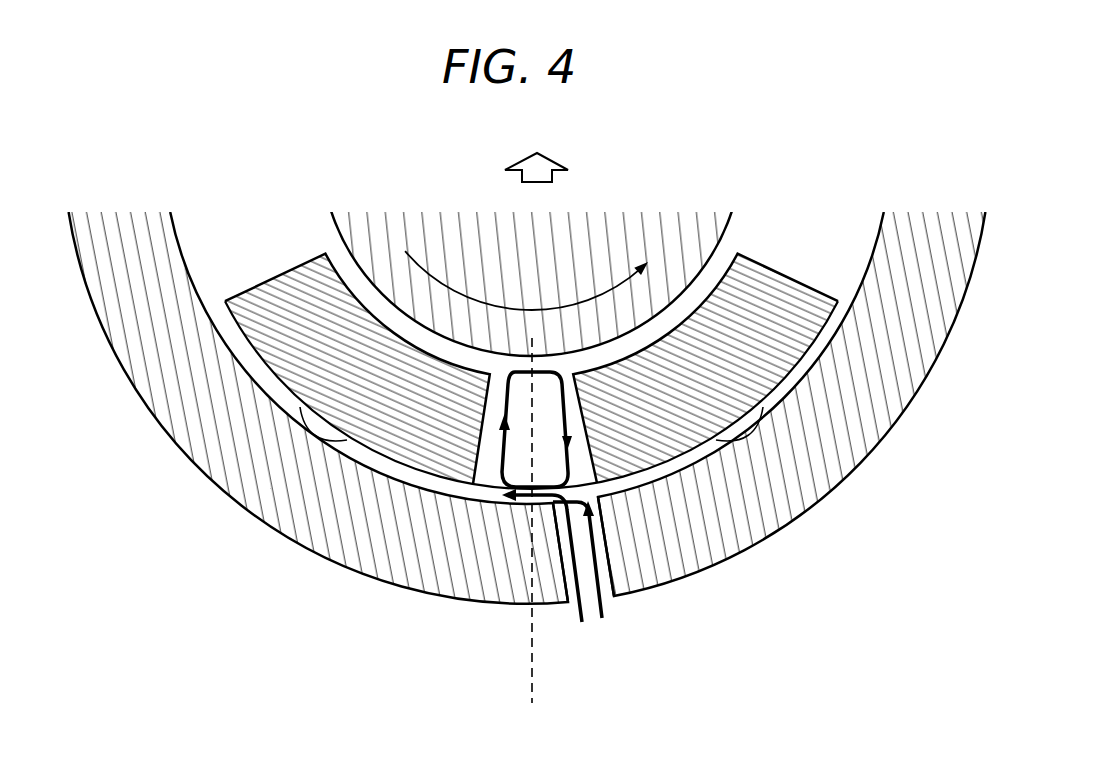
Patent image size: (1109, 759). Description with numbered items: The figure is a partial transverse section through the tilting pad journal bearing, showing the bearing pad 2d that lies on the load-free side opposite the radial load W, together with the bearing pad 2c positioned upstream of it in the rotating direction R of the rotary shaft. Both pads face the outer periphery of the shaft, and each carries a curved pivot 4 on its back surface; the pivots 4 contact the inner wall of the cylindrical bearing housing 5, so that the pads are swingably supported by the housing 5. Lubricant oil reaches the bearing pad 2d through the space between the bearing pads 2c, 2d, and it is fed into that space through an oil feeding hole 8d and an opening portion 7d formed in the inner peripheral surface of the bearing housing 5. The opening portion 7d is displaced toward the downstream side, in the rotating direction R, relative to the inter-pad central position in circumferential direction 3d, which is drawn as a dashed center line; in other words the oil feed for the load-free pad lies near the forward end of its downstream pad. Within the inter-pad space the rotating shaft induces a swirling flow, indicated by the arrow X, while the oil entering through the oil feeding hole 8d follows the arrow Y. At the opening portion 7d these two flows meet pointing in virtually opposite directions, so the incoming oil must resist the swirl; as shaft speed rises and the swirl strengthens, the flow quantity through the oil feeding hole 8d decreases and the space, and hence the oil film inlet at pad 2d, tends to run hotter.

The bearing pad 2c is at (423, 447).
The bearing pad 2d is at (787, 333).
The inter-pad central position in circumferential direction 3d is at (534, 535).
The pivot 4 is at (320, 437).
The bearing housing 5 is at (180, 422).
The opening portion 7d is at (552, 500).
The oil feeding hole 8d is at (563, 565).
The radial load W is at (536, 185).
The rotating direction R is at (532, 178).
The swirling flow X is at (568, 455).
The flow of oil flowing in through the oil feeding hole Y is at (577, 577).